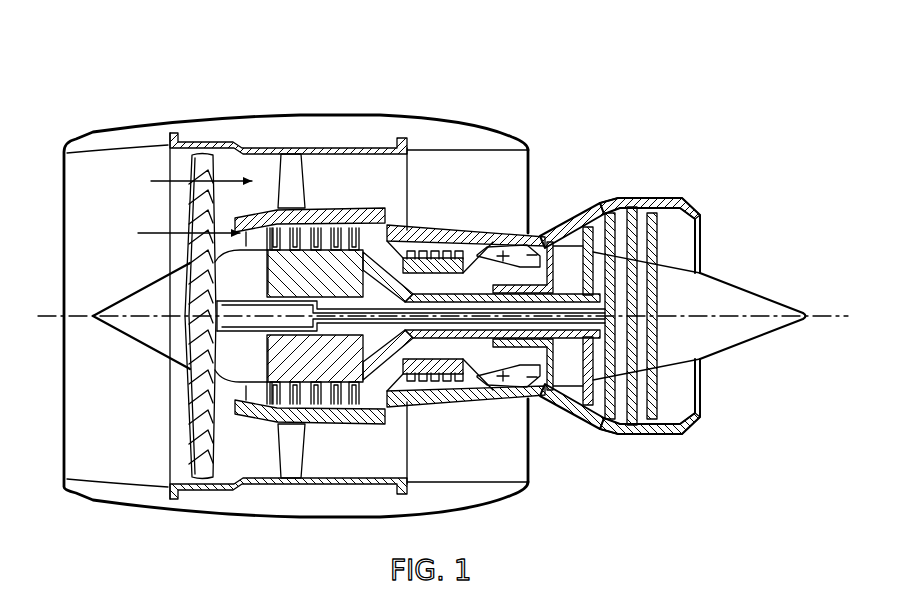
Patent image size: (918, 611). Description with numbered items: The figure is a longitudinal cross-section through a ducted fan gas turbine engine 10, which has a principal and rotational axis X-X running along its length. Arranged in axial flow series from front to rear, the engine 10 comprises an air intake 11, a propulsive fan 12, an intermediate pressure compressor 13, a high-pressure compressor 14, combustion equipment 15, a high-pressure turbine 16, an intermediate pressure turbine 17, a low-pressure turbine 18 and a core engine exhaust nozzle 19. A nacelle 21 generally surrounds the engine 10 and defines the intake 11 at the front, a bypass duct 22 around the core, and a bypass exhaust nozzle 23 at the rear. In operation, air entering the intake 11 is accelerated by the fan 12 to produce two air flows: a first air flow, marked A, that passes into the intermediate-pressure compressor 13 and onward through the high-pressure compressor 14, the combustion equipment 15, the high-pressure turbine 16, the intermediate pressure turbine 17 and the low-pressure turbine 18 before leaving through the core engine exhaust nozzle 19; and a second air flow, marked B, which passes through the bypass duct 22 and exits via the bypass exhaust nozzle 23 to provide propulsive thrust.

The ducted fan gas turbine engine 10 is at (111, 82).
The air intake 11 is at (115, 146).
The propulsive fan 12 is at (193, 438).
The intermediate pressure compressor 13 is at (330, 401).
The high-pressure compressor 14 is at (433, 248).
The combustion equipment 15 is at (497, 382).
The high-pressure turbine 16 is at (547, 403).
The intermediate pressure turbine 17 is at (585, 225).
The low-pressure turbine 18 is at (595, 427).
The core engine exhaust nozzle 19 is at (688, 200).
The nacelle 21 is at (325, 112).
The bypass duct 22 is at (509, 179).
The bypass exhaust nozzle 23 is at (527, 142).